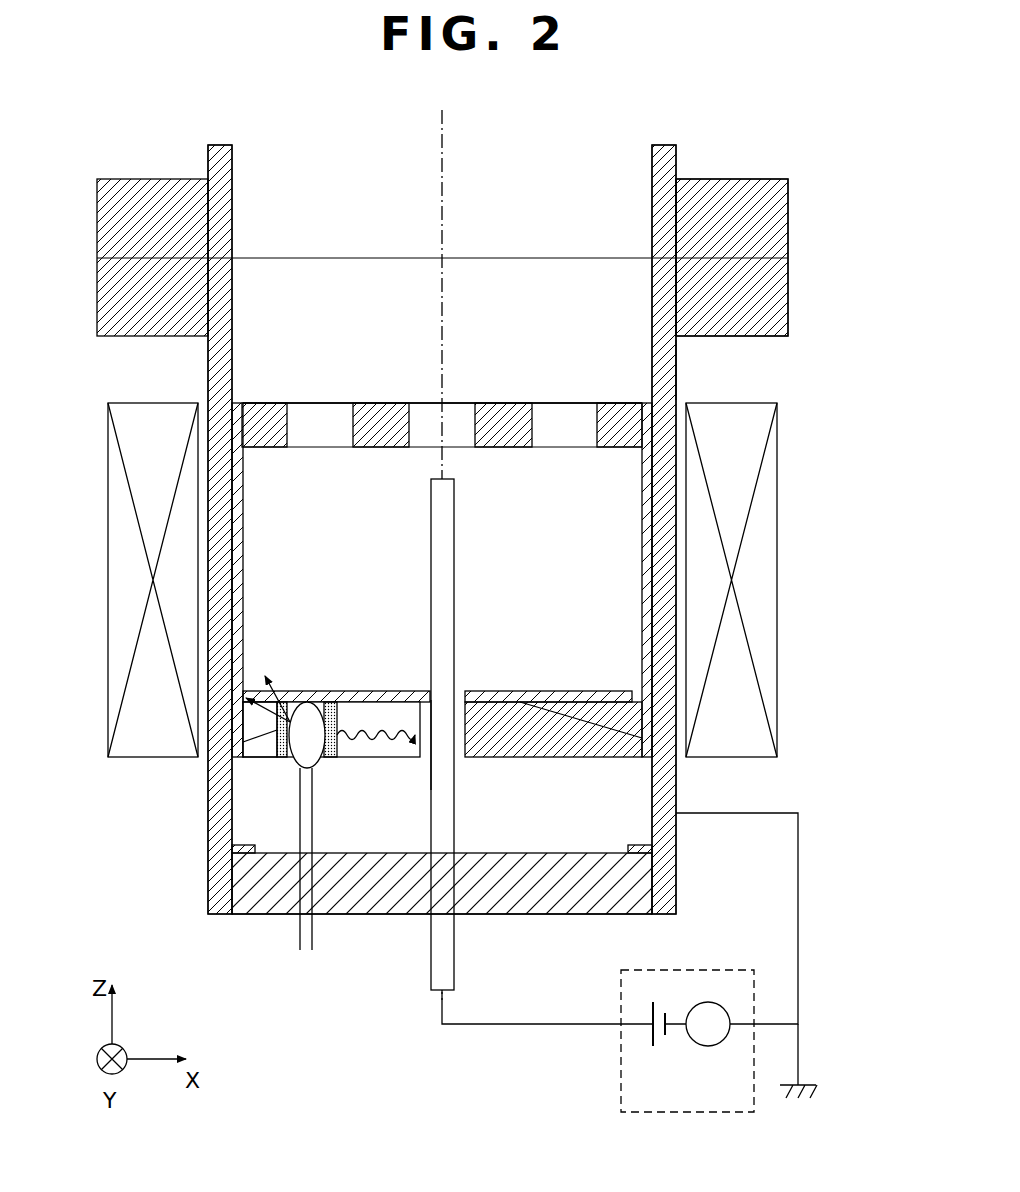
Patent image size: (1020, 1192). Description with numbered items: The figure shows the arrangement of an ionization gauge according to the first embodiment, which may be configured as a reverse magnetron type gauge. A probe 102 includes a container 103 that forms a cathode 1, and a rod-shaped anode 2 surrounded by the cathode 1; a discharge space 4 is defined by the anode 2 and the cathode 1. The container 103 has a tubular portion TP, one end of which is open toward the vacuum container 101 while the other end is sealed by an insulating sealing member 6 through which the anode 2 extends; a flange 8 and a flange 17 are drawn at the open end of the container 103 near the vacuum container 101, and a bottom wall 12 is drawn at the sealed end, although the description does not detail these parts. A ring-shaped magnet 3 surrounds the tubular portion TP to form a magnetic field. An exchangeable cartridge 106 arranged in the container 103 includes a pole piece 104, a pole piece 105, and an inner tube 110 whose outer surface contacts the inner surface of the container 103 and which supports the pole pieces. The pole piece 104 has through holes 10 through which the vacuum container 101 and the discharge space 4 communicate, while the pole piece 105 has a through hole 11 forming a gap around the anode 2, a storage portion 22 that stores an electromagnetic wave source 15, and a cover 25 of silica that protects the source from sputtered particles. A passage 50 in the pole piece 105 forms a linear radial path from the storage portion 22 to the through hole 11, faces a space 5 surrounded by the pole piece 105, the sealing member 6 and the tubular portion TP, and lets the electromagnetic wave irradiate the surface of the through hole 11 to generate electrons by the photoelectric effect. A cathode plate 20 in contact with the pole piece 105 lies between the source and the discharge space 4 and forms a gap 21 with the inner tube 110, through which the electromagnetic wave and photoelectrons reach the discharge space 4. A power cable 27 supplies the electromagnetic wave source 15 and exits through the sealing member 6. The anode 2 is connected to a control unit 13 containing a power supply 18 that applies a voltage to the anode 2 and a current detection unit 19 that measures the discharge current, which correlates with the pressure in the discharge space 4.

The cathode 1 is at (690, 788).
The anode 2 is at (430, 822).
The magnet 3 is at (780, 580).
The discharge space 4 is at (442, 569).
The space 5 is at (331, 802).
The sealing member 6 is at (260, 916).
The flange 8 is at (130, 170).
The through hole 10 is at (570, 420).
The through hole 11 is at (458, 762).
The bottom wall 12 is at (682, 885).
The control unit 13 is at (621, 1058).
The electromagnetic wave source 15 is at (320, 765).
The flange 17 is at (800, 298).
The power supply 18 is at (656, 1050).
The current detection unit 19 is at (708, 1048).
The cathode plate 20 is at (550, 690).
The gap 21 is at (248, 750).
The storage portion 22 is at (296, 700).
The cover 25 is at (332, 705).
The power cable 27 is at (318, 942).
The passage 50 is at (382, 746).
The vacuum container 101 is at (718, 167).
The probe 102 is at (158, 843).
The container 103 is at (757, 370).
The pole piece 104 is at (522, 450).
The pole piece 105 is at (270, 760).
The cartridge 106 is at (387, 378).
The inner tube 110 is at (644, 530).
The tubular portion TP is at (678, 372).